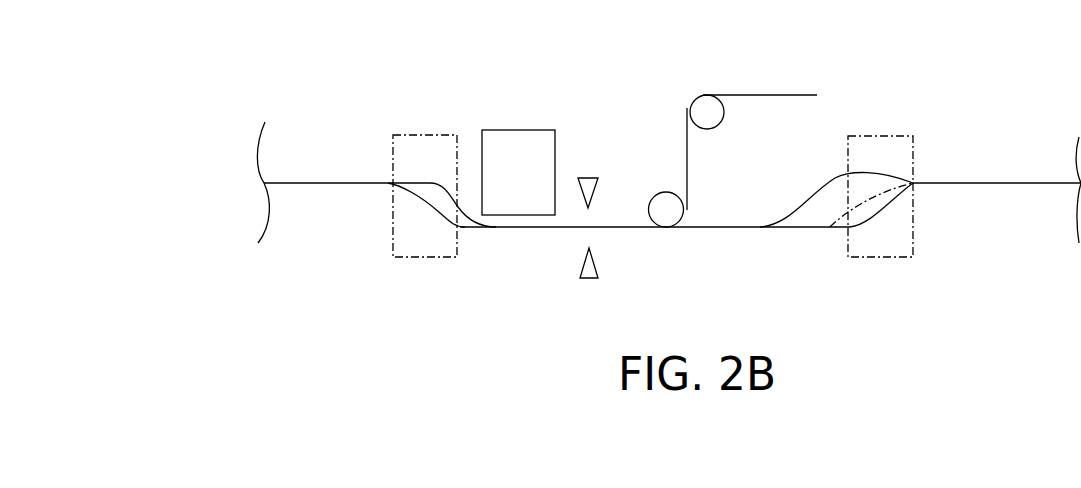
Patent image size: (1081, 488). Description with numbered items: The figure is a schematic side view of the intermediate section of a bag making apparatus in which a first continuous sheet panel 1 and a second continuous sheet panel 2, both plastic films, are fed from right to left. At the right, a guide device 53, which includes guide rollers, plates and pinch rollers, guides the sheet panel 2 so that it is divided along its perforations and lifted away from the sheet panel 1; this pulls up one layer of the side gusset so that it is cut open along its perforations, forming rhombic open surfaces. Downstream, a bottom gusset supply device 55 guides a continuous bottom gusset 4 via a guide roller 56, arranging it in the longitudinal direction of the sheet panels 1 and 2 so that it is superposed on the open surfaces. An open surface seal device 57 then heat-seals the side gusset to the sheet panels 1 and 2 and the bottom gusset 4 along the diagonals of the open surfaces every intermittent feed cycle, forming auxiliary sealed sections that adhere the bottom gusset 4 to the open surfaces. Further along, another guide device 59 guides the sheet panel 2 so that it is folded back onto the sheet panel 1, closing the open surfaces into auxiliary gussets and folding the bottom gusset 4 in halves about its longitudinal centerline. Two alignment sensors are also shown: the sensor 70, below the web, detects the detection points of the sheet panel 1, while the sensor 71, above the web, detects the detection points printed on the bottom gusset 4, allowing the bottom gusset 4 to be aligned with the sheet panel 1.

The first continuous sheet panel 1 is at (1006, 184).
The second continuous sheet panel 2 is at (1040, 182).
The bottom gusset 4 is at (760, 95).
The guide device 53 is at (890, 134).
The bottom gusset supply device 55 is at (676, 92).
The guide roller 56 is at (664, 200).
The open surface seal device 57 is at (520, 130).
The guide device 59 is at (422, 133).
The sensor 70 is at (590, 280).
The sensor 71 is at (588, 177).